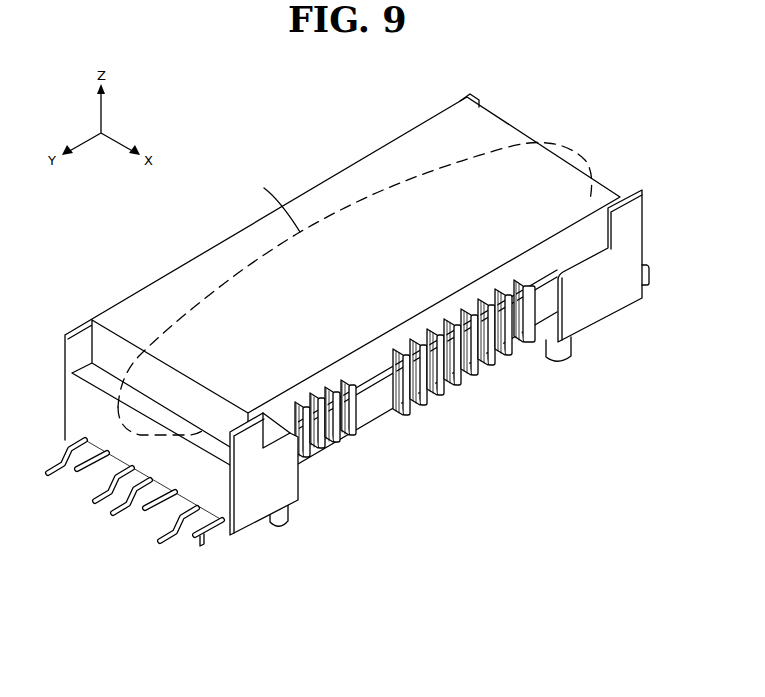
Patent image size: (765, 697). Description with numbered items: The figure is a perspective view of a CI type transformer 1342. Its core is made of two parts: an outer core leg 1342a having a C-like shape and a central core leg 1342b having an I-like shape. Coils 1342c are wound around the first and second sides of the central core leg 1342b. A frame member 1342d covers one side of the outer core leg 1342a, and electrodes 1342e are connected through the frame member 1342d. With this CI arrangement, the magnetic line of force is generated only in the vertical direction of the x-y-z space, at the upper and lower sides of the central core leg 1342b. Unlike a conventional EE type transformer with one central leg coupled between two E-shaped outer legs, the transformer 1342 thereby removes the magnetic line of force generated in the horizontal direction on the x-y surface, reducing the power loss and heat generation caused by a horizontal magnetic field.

The CI type transformer 1342 is at (232, 65).
The outer core leg 1342a is at (397, 163).
The central core leg 1342b is at (388, 427).
The coils 1342c is at (477, 363).
The frame member 1342d is at (252, 515).
The electrodes 1342e is at (212, 546).